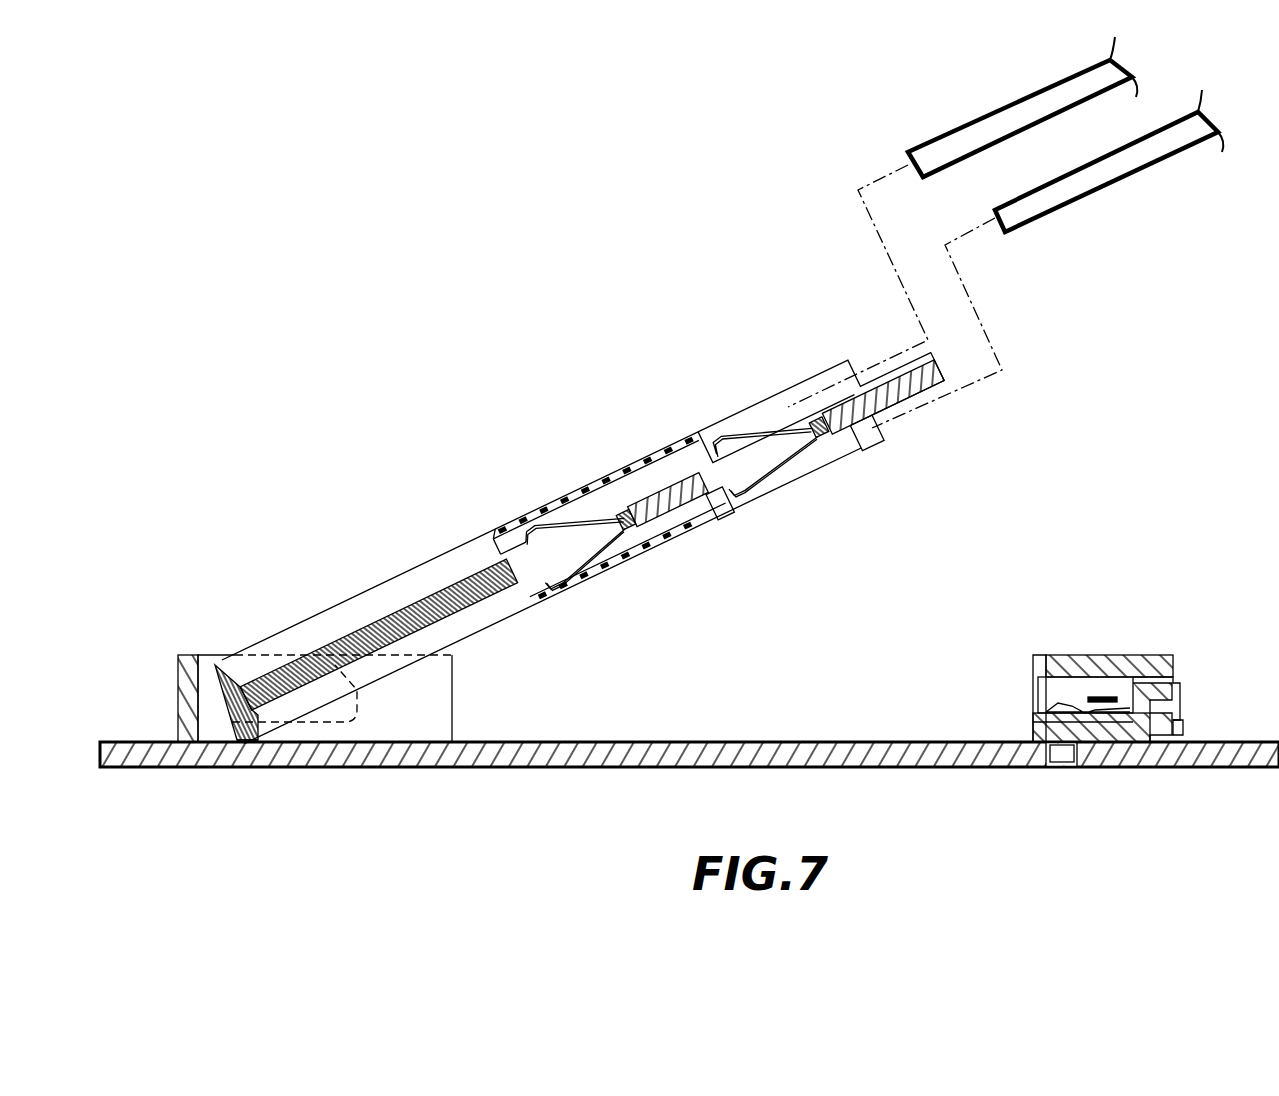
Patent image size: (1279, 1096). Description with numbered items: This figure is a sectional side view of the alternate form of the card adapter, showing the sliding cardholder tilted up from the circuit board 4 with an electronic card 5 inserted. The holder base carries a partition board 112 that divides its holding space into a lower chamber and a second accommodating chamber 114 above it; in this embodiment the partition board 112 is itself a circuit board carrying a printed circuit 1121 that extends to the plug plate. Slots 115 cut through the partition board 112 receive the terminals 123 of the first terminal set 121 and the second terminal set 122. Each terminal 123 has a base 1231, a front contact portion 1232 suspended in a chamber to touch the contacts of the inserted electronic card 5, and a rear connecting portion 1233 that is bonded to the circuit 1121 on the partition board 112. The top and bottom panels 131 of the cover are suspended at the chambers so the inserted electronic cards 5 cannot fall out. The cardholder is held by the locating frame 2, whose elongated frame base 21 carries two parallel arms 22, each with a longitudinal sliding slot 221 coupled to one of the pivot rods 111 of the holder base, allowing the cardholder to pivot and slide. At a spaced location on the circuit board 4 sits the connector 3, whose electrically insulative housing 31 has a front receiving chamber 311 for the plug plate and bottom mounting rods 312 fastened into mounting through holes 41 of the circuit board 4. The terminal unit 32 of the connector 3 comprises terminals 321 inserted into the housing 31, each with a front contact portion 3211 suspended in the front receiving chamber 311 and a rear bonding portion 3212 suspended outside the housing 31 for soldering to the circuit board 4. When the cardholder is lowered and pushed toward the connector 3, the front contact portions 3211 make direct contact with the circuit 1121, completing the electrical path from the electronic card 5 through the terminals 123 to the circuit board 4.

The locating frame 2 is at (288, 691).
The elongated frame base 21 is at (180, 687).
The arms 22 is at (415, 727).
The sliding slot 221 is at (337, 722).
The pivot rods 111 is at (217, 727).
The partition board 112 is at (392, 612).
The second accommodating chamber 114 is at (315, 637).
The slots 115 is at (528, 567).
The circuit 1121 is at (728, 514).
The first terminal set 121 is at (590, 570).
The second terminal set 122 is at (530, 514).
The terminals 123 is at (707, 457).
The base 1231 is at (532, 515).
The front contact portion 1232 is at (507, 529).
The rear connecting portion 1233 is at (636, 527).
The top and bottom panels 131 is at (620, 470).
The connector 3 is at (1094, 681).
The housing 31 is at (1147, 657).
The front receiving chamber 311 is at (1035, 703).
The bottom mounting rods 312 is at (1066, 765).
The terminal unit 32 is at (1185, 697).
The terminals 321 is at (1090, 655).
The front contact portion 3211 is at (1063, 700).
The rear bonding portion 3212 is at (1175, 737).
The circuit board 4 is at (764, 770).
The mounting through holes 41 is at (1085, 768).
The electronic cards 5 is at (1092, 175).